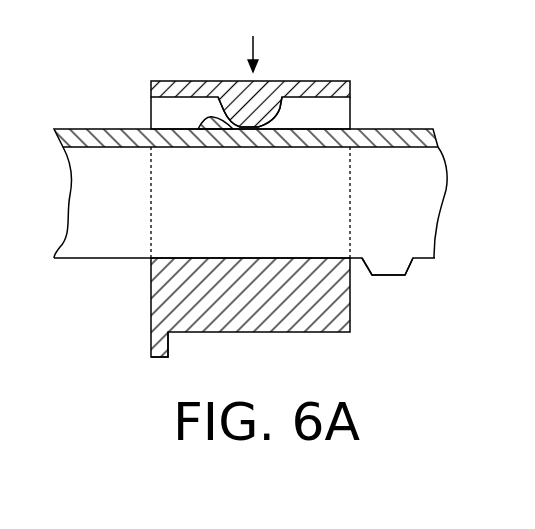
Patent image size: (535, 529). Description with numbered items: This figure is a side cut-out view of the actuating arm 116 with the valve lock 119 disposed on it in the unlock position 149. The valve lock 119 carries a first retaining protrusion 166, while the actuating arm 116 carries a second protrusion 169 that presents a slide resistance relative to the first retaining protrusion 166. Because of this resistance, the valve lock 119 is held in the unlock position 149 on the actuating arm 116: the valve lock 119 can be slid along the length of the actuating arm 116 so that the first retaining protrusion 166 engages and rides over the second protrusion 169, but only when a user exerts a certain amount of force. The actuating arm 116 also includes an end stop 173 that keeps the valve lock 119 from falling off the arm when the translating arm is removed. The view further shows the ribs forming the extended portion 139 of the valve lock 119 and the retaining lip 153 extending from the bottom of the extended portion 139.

The actuating arm 116 is at (388, 133).
The valve lock 119 is at (305, 90).
The extended portion 139 is at (300, 318).
The unlock position 149 is at (251, 43).
The retaining lip 153 is at (160, 358).
The first retaining protrusion 166 is at (282, 109).
The second protrusion 169 is at (205, 119).
The end stop 173 is at (399, 262).